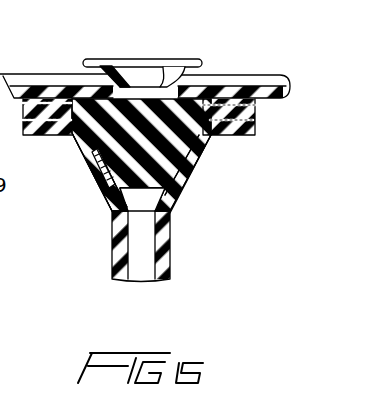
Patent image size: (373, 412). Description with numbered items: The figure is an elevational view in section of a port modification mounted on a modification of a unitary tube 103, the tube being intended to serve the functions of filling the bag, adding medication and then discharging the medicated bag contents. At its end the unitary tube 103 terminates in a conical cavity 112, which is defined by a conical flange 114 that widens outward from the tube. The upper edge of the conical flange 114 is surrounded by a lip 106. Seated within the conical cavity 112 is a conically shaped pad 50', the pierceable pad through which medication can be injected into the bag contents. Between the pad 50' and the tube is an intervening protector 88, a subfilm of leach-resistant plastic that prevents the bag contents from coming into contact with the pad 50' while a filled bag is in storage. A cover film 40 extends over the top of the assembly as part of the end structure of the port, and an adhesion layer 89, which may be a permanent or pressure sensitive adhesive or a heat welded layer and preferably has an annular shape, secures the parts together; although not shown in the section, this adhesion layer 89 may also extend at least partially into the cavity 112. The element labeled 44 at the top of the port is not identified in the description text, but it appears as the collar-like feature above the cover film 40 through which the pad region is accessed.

The cover film 40 is at (40, 77).
The collar 44 is at (135, 62).
The adhesion layer 89 is at (257, 119).
The lip 106 is at (247, 136).
The conically shaped pad 50' is at (163, 155).
The protector 88 is at (88, 170).
The conical cavity 112 is at (93, 184).
The conical flange 114 is at (191, 186).
The unitary tube 103 is at (171, 242).